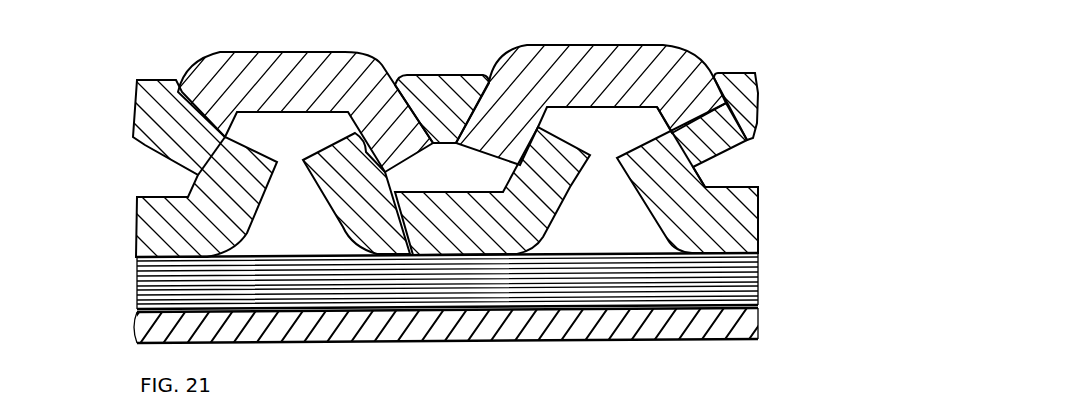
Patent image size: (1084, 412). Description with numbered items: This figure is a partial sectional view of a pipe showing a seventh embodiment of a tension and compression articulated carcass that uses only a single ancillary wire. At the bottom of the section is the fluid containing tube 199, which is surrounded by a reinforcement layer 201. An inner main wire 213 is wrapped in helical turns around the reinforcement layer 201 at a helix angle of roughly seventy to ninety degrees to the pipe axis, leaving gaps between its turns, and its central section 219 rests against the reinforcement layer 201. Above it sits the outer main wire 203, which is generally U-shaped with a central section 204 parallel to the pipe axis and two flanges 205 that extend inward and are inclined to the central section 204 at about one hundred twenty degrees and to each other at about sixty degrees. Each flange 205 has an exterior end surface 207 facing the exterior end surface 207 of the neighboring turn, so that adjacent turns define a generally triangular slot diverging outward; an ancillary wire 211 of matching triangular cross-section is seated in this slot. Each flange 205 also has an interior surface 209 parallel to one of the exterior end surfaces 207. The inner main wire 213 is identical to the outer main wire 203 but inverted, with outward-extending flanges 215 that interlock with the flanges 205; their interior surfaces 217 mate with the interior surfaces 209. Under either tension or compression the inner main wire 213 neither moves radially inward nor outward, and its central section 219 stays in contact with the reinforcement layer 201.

The fluid containing tube 199 is at (687, 320).
The reinforcement layer 201 is at (738, 271).
The outer main wire 203 is at (697, 57).
The central section 204 is at (600, 84).
The flanges 205 is at (490, 82).
The exterior end surface 207 is at (462, 197).
The interior surface 209 is at (363, 147).
The ancillary wire 211 is at (510, 215).
The inner main wire 213 is at (733, 183).
The flanges 215 is at (617, 157).
The interior surfaces 217 is at (225, 152).
The central section 219 is at (435, 230).